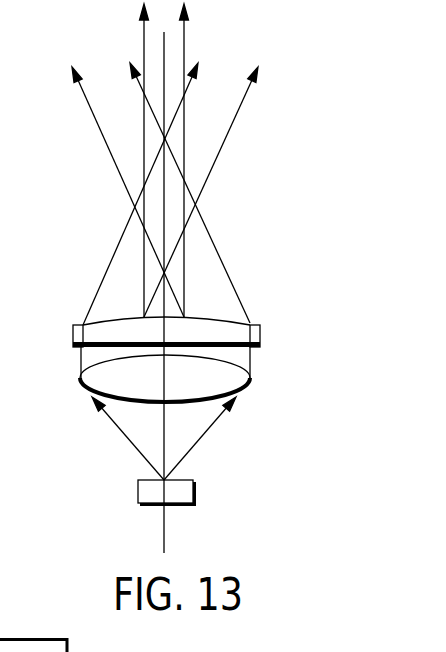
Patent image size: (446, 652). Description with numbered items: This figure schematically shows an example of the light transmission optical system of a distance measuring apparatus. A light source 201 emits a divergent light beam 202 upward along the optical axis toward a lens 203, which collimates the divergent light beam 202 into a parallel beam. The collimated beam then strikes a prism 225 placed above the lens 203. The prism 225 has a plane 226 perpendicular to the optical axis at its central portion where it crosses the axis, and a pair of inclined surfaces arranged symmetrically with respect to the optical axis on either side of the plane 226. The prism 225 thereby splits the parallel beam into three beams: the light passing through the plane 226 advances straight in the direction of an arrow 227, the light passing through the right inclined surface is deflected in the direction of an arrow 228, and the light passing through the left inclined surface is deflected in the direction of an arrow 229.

The light source 201 is at (196, 490).
The divergent light beam 202 is at (202, 440).
The lens 203 is at (240, 378).
The prism 225 is at (213, 328).
The plane 226 is at (173, 313).
The arrow 227 is at (185, 38).
The arrow 228 is at (220, 250).
The arrow 229 is at (107, 263).